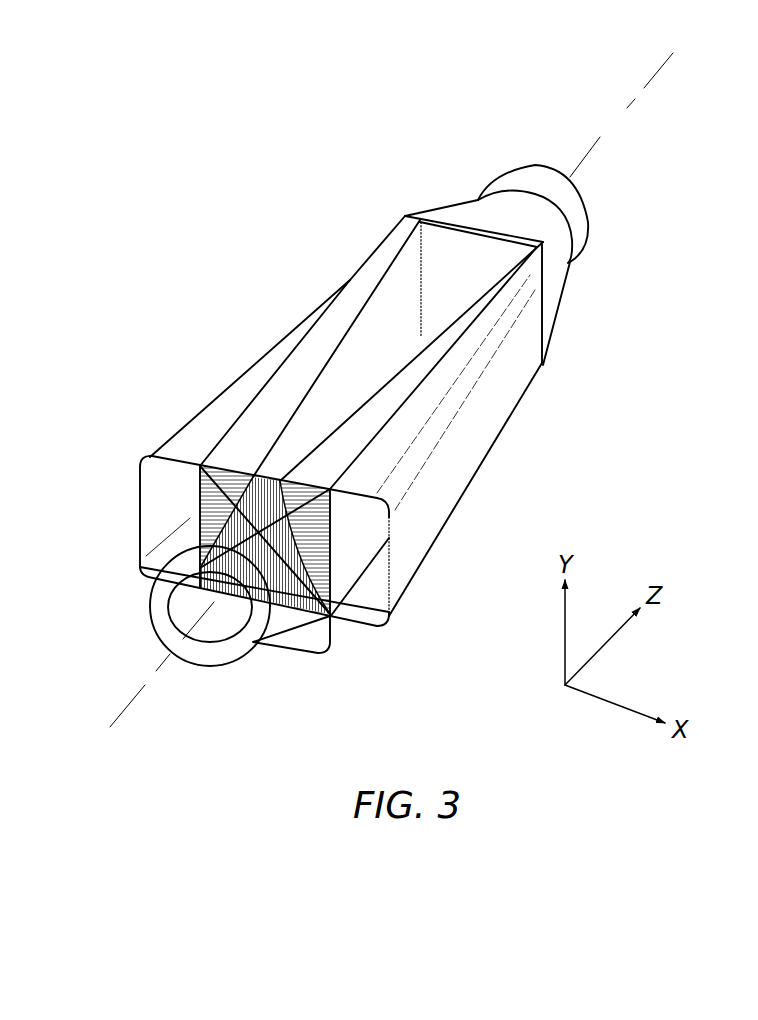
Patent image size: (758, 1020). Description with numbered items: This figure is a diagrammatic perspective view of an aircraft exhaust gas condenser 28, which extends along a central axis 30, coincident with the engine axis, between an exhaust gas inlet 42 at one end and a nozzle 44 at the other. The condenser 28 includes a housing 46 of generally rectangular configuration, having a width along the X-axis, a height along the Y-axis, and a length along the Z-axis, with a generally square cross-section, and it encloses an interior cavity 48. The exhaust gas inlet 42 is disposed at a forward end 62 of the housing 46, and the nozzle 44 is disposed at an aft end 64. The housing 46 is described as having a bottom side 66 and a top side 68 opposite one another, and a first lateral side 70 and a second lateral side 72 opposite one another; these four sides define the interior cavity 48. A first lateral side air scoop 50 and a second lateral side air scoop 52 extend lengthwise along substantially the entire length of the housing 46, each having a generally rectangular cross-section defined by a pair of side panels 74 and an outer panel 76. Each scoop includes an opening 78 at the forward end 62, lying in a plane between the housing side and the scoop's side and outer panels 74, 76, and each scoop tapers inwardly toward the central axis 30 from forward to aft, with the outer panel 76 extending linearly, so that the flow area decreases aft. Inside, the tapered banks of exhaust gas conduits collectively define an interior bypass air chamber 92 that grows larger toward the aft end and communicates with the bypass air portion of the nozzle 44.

The exhaust gas condenser 28 is at (222, 168).
The central axis 30 is at (643, 88).
The exhaust gas inlet 42 is at (253, 685).
The nozzle 44 is at (539, 148).
The housing 46 is at (350, 254).
The interior cavity 48 is at (453, 256).
The first lateral side air scoop 50 is at (140, 530).
The second lateral side air scoop 52 is at (440, 530).
The forward end 62 is at (198, 455).
The aft end 64 is at (404, 213).
The bottom side 66 is at (298, 628).
The top side 68 is at (273, 400).
The first lateral side 70 is at (350, 280).
The second lateral side 72 is at (467, 330).
The side panels 74 is at (178, 448).
The outer panel 76 is at (140, 483).
The opening 78 is at (160, 560).
The interior bypass air chamber 92 is at (473, 270).